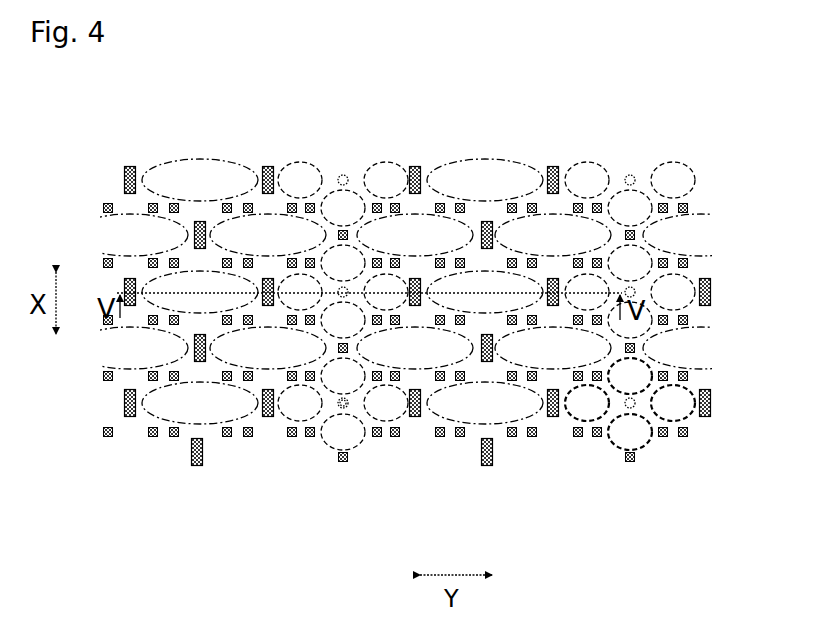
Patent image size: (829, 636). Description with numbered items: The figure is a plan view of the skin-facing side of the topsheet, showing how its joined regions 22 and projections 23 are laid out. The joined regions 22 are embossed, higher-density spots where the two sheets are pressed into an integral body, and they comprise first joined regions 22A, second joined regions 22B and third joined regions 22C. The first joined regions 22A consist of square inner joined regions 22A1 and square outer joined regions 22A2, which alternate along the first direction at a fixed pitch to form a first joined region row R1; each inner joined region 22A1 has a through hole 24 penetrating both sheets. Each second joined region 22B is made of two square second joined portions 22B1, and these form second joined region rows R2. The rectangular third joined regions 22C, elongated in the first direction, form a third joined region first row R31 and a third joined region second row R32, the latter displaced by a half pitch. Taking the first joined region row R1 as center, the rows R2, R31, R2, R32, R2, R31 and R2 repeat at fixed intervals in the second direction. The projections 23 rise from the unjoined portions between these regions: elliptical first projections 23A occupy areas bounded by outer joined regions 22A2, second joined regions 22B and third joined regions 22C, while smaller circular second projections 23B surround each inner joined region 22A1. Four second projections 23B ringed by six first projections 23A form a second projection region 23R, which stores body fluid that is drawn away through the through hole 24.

The first joined region row R1 is at (343, 172).
The second joined region row R2 is at (108, 190).
The third joined region first row R31 is at (132, 155).
The third joined region second row R32 is at (200, 215).
The joined regions 22 is at (418, 398).
The first joined regions 22A is at (501, 412).
The inner joined region 22A1 is at (341, 406).
The outer joined region 22A2 is at (342, 350).
The second joined region 22B is at (158, 445).
The second joined portion 22B1 is at (245, 436).
The third joined region 22C is at (130, 417).
The projections 23 is at (415, 351).
The first projection 23A is at (550, 347).
The second projection 23B is at (622, 383).
The second projection region 23R is at (693, 418).
The through hole 24 is at (346, 406).